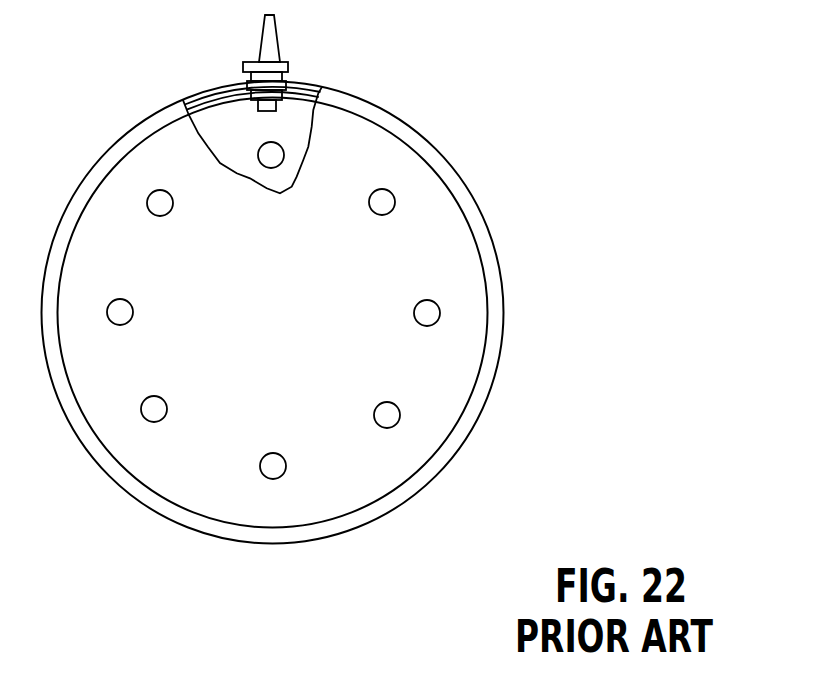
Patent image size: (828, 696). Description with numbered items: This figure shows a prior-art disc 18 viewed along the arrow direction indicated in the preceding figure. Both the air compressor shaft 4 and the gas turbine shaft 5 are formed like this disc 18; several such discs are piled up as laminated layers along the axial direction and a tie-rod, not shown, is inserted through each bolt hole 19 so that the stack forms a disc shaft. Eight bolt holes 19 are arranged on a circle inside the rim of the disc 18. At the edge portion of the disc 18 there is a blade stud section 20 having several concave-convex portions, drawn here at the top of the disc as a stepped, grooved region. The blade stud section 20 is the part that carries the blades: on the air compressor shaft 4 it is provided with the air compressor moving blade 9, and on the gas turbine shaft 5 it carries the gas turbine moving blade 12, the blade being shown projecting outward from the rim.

The air compressor shaft 4 is at (509, 246).
The gas turbine shaft 5 is at (328, 313).
The air compressor moving blade 9 is at (280, 44).
The gas turbine moving blade 12 is at (333, 63).
The disc 18 is at (455, 392).
The bolt hole 19 is at (284, 157).
The blade stud section 20 is at (213, 98).